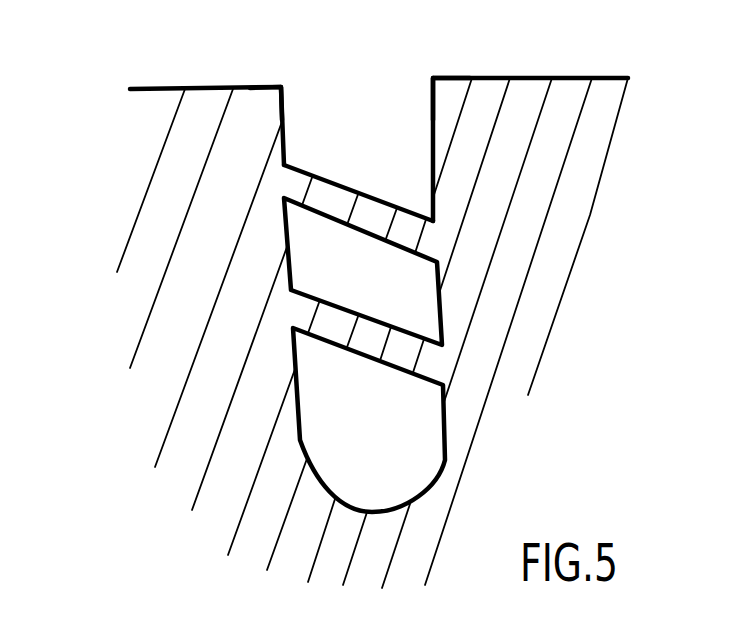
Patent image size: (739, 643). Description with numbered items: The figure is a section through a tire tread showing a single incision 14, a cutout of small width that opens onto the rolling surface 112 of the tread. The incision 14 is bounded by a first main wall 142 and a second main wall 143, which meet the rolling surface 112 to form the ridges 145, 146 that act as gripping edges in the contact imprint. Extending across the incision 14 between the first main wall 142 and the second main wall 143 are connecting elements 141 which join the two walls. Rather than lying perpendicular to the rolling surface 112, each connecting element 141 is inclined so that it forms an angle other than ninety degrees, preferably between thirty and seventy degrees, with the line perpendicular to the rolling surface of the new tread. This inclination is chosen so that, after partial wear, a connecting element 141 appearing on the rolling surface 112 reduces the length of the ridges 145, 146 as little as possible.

The rolling surface 112 is at (557, 78).
The incision 14 is at (358, 137).
The first main wall 142 is at (283, 142).
The second main wall 143 is at (433, 193).
The ridge 145 is at (297, 65).
The ridge 146 is at (476, 63).
The connecting element 141 is at (400, 231).